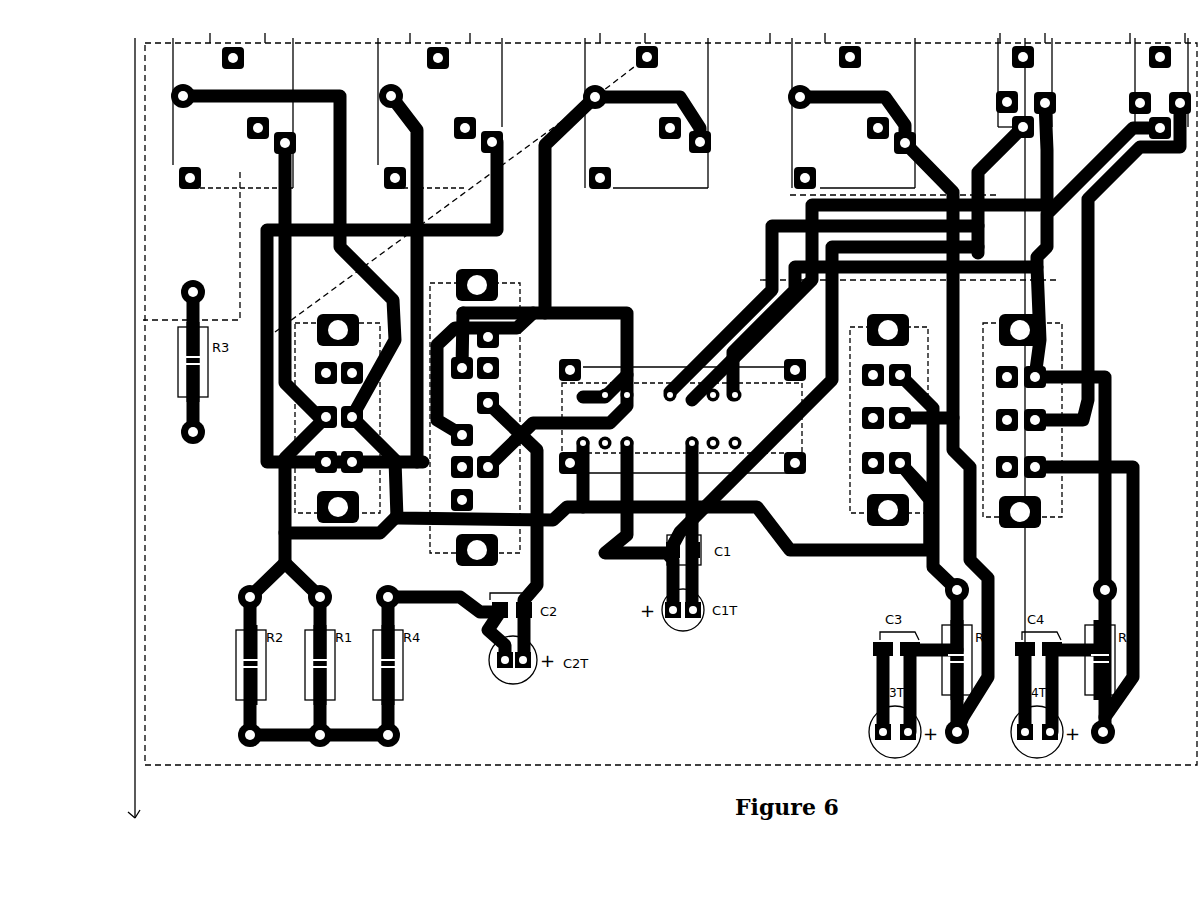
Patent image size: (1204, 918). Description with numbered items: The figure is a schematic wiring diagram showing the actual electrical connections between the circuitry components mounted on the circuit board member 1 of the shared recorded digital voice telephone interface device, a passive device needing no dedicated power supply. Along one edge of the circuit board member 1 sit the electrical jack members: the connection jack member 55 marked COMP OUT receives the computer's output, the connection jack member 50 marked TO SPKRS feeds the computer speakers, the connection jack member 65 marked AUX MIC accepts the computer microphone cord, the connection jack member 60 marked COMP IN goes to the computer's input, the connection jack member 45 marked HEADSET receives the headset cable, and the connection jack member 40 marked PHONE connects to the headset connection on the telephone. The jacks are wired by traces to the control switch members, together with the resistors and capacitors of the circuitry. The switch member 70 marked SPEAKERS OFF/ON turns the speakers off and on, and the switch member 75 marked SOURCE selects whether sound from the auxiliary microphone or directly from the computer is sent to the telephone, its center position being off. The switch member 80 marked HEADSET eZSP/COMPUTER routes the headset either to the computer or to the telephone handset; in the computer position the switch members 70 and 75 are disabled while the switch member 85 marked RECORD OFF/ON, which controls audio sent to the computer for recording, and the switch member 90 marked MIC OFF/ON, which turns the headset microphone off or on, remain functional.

The circuit board member 1 is at (200, 602).
The connection jack member 40 is at (1155, 62).
The connection jack member 45 is at (1015, 62).
The connection jack member 50 is at (450, 58).
The connection jack member 55 is at (248, 58).
The connection jack member 60 is at (848, 68).
The connection jack member 65 is at (660, 57).
The switch member 70 is at (323, 530).
The switch member 75 is at (505, 283).
The switch member 80 is at (648, 390).
The switch member 85 is at (850, 500).
The switch member 90 is at (1047, 345).